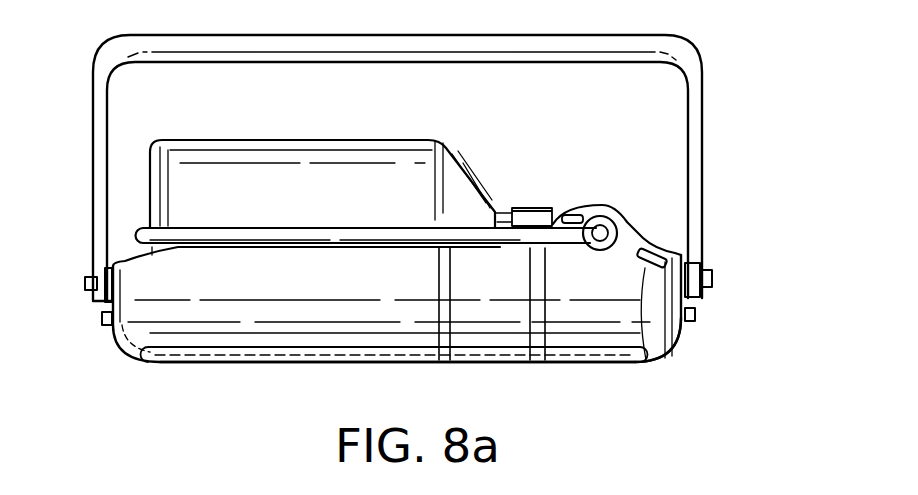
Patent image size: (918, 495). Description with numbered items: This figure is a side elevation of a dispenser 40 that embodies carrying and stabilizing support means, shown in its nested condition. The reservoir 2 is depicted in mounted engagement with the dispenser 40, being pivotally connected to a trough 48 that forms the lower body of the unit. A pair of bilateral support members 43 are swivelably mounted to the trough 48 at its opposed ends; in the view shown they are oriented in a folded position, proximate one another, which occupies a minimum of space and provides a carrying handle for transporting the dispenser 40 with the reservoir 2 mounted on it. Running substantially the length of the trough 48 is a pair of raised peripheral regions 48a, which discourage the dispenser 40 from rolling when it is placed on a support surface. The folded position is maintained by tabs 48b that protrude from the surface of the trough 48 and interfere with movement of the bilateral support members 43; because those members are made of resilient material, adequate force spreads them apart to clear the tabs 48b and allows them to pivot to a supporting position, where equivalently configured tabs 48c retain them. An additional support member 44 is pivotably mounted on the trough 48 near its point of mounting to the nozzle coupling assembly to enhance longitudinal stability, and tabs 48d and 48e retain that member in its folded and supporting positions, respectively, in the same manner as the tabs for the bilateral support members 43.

The reservoir 2 is at (347, 152).
The dispenser 40 is at (738, 111).
The bilateral support members 43 is at (570, 43).
The additional support member 44 is at (215, 236).
The trough 48 is at (136, 343).
The raised peripheral regions 48a is at (217, 362).
The tabs 48b is at (92, 284).
The tabs 48c is at (102, 320).
The tab 48d is at (571, 214).
The tab 48e is at (654, 353).